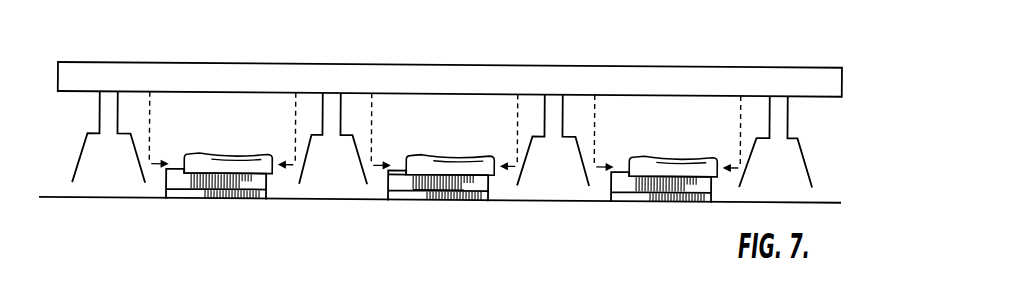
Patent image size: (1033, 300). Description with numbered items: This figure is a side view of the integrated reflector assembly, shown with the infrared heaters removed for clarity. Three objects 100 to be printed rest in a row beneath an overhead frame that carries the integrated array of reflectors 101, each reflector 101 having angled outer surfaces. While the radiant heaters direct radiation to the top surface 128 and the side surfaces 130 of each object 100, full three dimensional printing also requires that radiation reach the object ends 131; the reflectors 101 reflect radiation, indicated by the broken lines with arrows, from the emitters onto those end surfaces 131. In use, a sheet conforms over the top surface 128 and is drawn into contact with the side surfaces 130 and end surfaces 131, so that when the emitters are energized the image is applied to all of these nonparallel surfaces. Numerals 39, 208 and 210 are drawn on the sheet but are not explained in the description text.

The substrate module 39 is at (258, 198).
The object 100 is at (197, 162).
The reflectors 101 is at (807, 148).
The top surface 128 is at (445, 157).
The side surfaces 130 is at (446, 162).
The end surfaces 131 is at (408, 159).
The component 208 is at (85, 295).
The component 210 is at (530, 298).